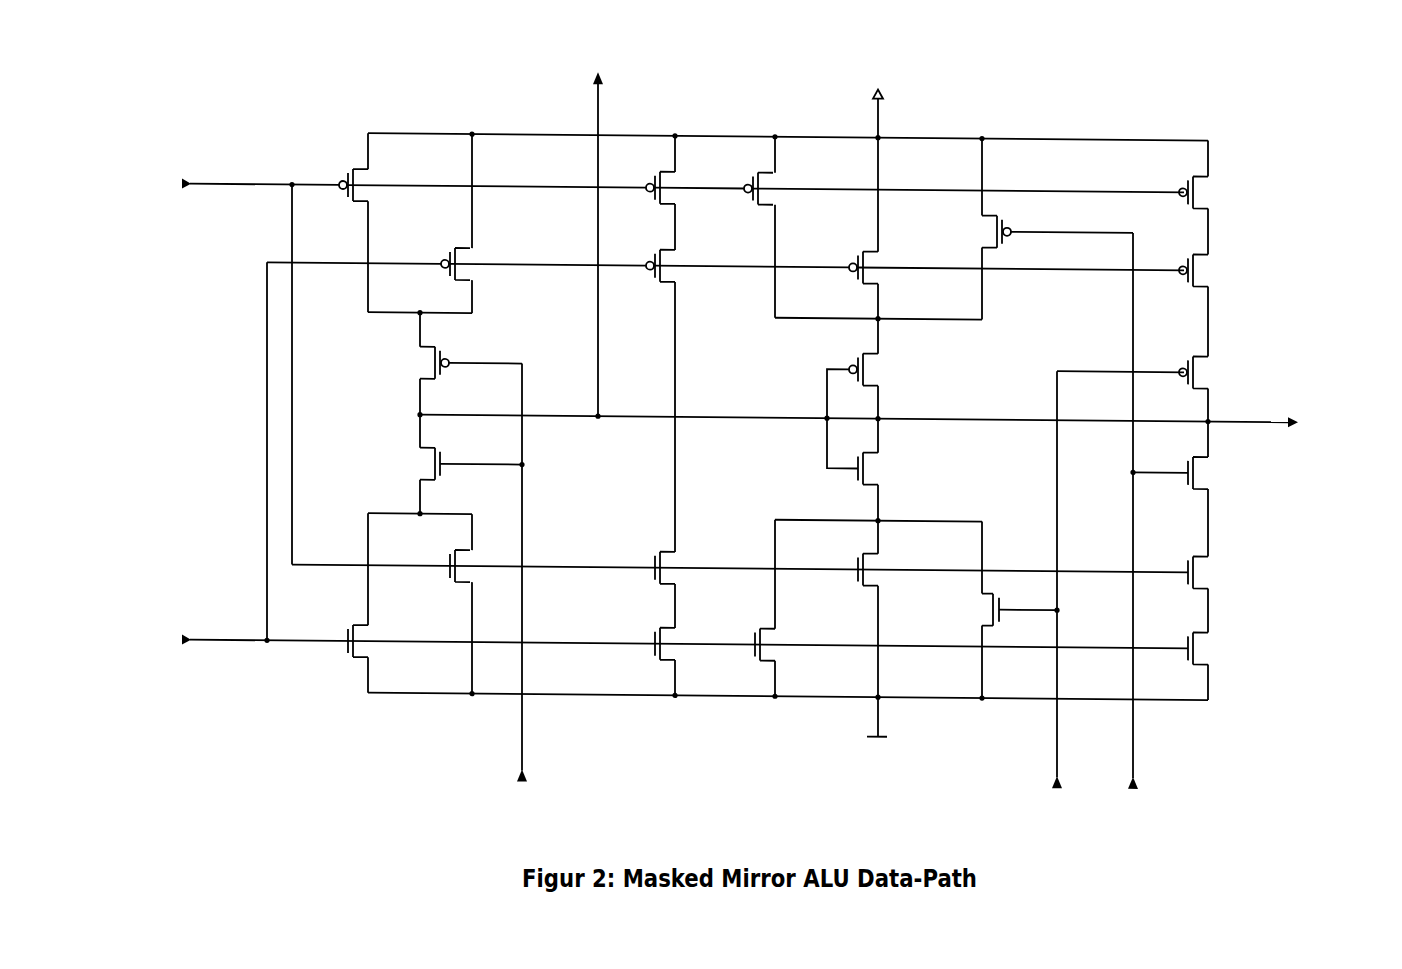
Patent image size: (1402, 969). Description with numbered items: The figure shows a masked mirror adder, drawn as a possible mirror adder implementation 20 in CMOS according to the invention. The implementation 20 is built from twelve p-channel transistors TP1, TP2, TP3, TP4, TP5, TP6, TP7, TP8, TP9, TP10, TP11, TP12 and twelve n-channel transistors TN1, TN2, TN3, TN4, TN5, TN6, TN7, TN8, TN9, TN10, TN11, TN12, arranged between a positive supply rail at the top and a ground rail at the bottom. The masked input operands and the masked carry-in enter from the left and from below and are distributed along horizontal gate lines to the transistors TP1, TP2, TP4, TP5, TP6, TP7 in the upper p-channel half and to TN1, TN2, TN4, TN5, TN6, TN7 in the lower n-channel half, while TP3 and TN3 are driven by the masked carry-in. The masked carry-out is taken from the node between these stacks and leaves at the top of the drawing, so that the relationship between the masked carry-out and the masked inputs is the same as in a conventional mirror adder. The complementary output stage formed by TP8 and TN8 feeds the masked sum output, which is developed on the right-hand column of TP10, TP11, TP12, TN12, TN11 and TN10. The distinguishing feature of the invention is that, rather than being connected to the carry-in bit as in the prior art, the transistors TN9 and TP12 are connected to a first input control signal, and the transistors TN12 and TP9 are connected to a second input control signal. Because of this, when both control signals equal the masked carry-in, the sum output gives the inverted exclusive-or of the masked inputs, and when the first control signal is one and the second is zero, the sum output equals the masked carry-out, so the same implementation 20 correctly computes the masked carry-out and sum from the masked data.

The mirror adder implementation 20 is at (746, 417).
The transistor TP1 is at (370, 183).
The transistor TP2 is at (472, 262).
The transistor TP3 is at (423, 362).
The transistor TP4 is at (677, 187).
The transistor TP5 is at (677, 265).
The transistor TP6 is at (775, 187).
The transistor TP7 is at (880, 265).
The transistor TP8 is at (875, 369).
The transistor TP9 is at (985, 231).
The transistor TP10 is at (1213, 192).
The transistor TP11 is at (1213, 270).
The transistor TP12 is at (1213, 372).
The transistor TN1 is at (374, 645).
The transistor TN2 is at (478, 570).
The transistor TN3 is at (417, 463).
The transistor TN4 is at (681, 649).
The transistor TN5 is at (681, 573).
The transistor TN6 is at (781, 649).
The transistor TN7 is at (885, 573).
The transistor TN8 is at (880, 468).
The transistor TN9 is at (977, 609).
The transistor TN10 is at (1218, 648).
The transistor TN11 is at (1218, 572).
The transistor TN12 is at (1218, 473).